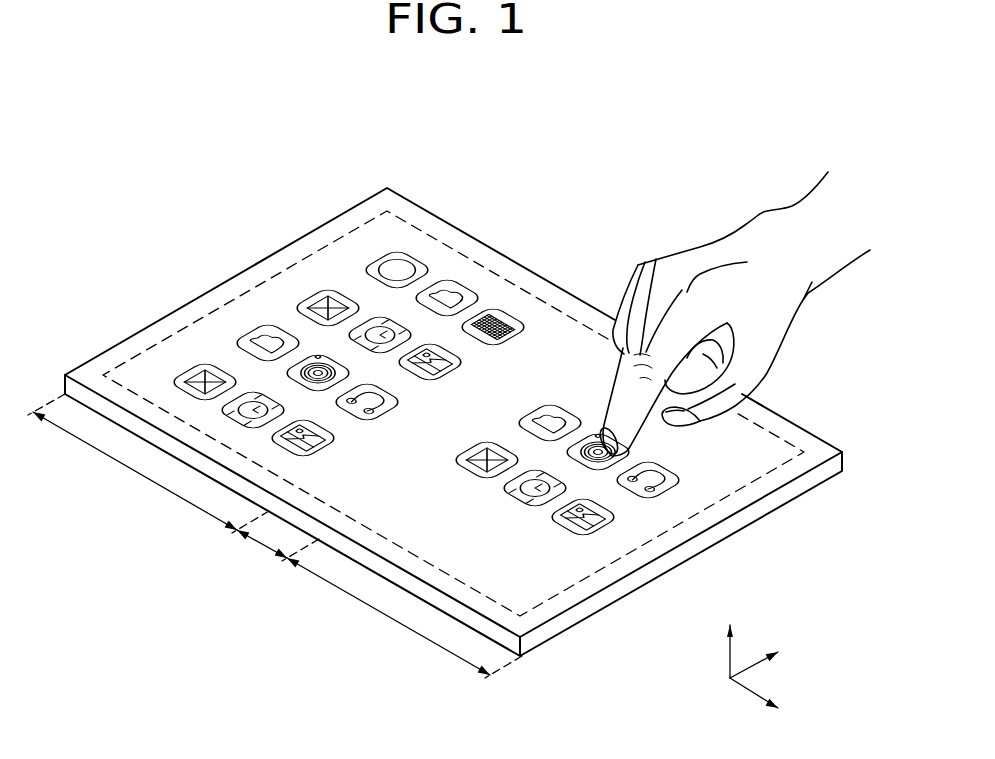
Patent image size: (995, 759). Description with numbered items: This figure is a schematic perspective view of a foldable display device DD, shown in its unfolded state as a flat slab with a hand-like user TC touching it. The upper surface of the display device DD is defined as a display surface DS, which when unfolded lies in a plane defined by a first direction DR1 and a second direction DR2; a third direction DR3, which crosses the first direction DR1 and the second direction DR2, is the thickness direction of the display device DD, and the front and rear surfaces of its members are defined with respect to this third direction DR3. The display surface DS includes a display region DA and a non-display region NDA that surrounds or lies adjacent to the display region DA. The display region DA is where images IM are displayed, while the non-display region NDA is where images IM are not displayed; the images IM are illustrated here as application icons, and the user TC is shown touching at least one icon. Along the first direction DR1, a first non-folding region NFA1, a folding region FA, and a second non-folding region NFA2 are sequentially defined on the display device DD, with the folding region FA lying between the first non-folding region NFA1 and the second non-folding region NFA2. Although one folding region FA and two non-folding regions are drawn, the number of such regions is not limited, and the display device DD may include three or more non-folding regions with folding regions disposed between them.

The display device DD is at (696, 146).
The display surface DS is at (547, 200).
The non-display region NDA is at (538, 286).
The display region DA is at (557, 346).
The images IM is at (314, 296).
The user TC is at (802, 221).
The first non-folding region NFA1 is at (148, 463).
The folding region FA is at (278, 549).
The second non-folding region NFA2 is at (404, 618).
The first direction DR1 is at (776, 701).
The second direction DR2 is at (776, 656).
The third direction DR3 is at (729, 639).